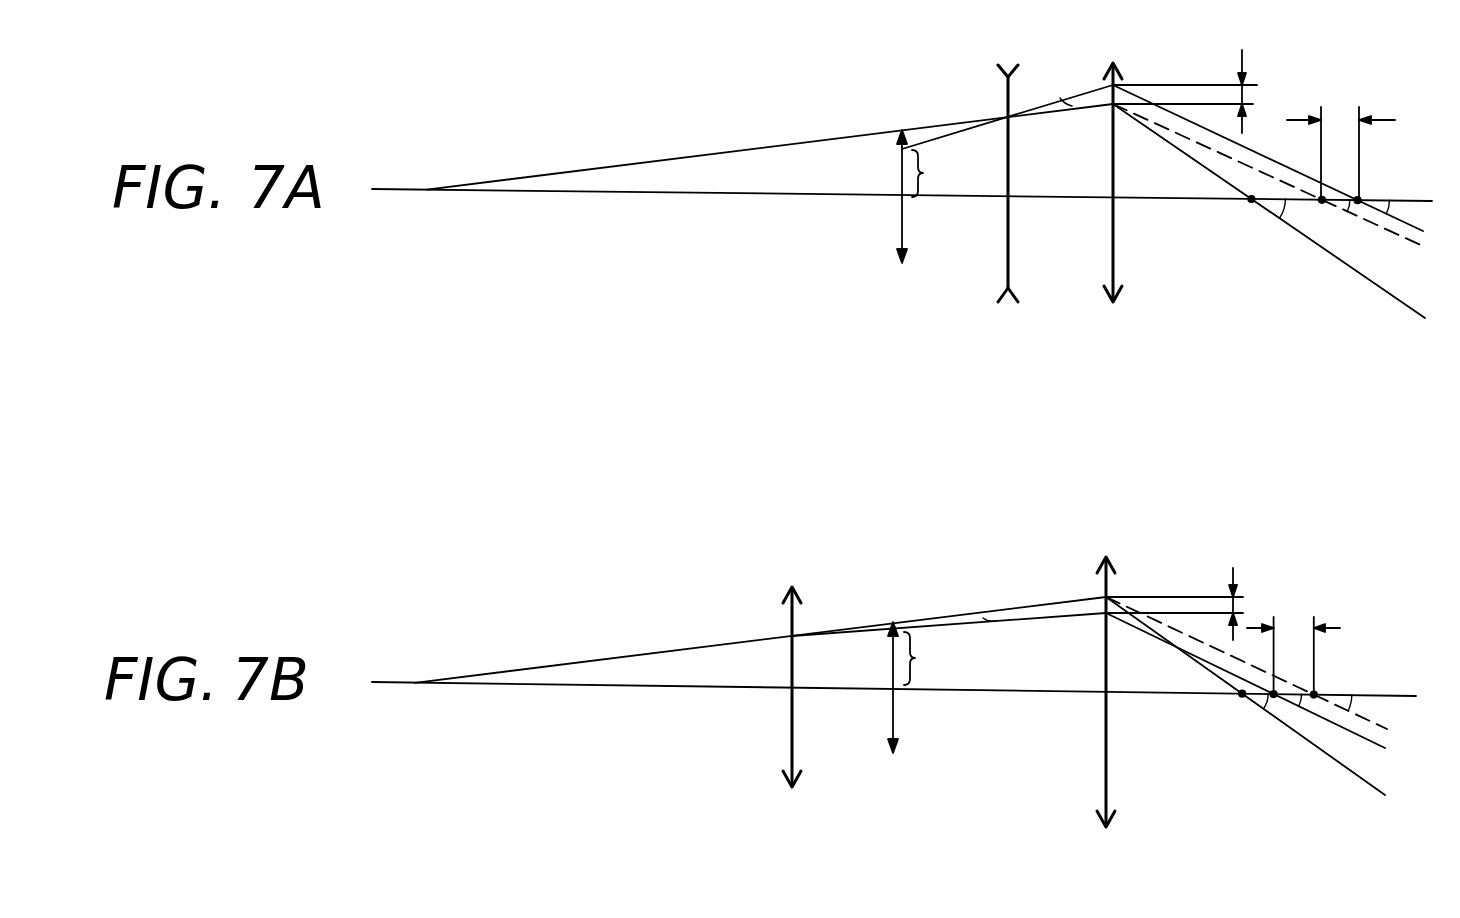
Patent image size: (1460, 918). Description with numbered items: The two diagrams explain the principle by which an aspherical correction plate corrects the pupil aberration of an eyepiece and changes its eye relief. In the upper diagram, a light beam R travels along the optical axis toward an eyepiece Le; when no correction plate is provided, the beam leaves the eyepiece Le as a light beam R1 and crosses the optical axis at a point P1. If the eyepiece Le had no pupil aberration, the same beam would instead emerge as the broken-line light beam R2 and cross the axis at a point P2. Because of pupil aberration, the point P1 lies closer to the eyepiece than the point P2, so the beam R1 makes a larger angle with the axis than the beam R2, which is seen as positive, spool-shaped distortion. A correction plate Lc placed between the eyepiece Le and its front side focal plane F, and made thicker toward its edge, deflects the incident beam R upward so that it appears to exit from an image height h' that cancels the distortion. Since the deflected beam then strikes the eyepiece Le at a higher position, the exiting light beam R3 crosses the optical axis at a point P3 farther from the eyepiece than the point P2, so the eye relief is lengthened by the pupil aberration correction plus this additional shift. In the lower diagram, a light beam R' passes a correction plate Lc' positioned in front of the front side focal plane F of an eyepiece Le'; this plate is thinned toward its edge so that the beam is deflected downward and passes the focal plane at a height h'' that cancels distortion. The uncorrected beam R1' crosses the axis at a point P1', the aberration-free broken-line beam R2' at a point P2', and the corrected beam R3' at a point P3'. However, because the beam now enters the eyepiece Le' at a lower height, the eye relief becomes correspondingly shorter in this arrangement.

In FIG. 7A, the light beam R is at (770, 147).
In FIG. 7A, the correction plate Lc is at (1011, 164).
In FIG. 7A, the eyepiece Le is at (1116, 164).
In FIG. 7A, the front side focal plane F is at (900, 229).
In FIG. 7B, the front side focal plane F is at (888, 716).
In FIG. 7A, the image height h' is at (933, 173).
In FIG. 7A, the light beam R1 is at (1286, 226).
In FIG. 7A, the light beam R2 is at (1286, 191).
In FIG. 7A, the light beam R3 is at (1286, 168).
In FIG. 7A, the point P1 is at (1221, 230).
In FIG. 7A, the point P2 is at (1297, 254).
In FIG. 7A, the point P3 is at (1371, 272).
In FIG. 7B, the light beam R' is at (760, 637).
In FIG. 7B, the correction plate Lc' is at (794, 666).
In FIG. 7B, the eyepiece Le' is at (1111, 674).
In FIG. 7B, the height on the focal plane h'' is at (926, 658).
In FIG. 7B, the light beam R1' is at (1269, 707).
In FIG. 7B, the light beam R2' is at (1269, 671).
In FIG. 7B, the light beam R3' is at (1269, 695).
In FIG. 7B, the point P1' is at (1208, 726).
In FIG. 7B, the point P2' is at (1351, 653).
In FIG. 7B, the point P3' is at (1280, 745).